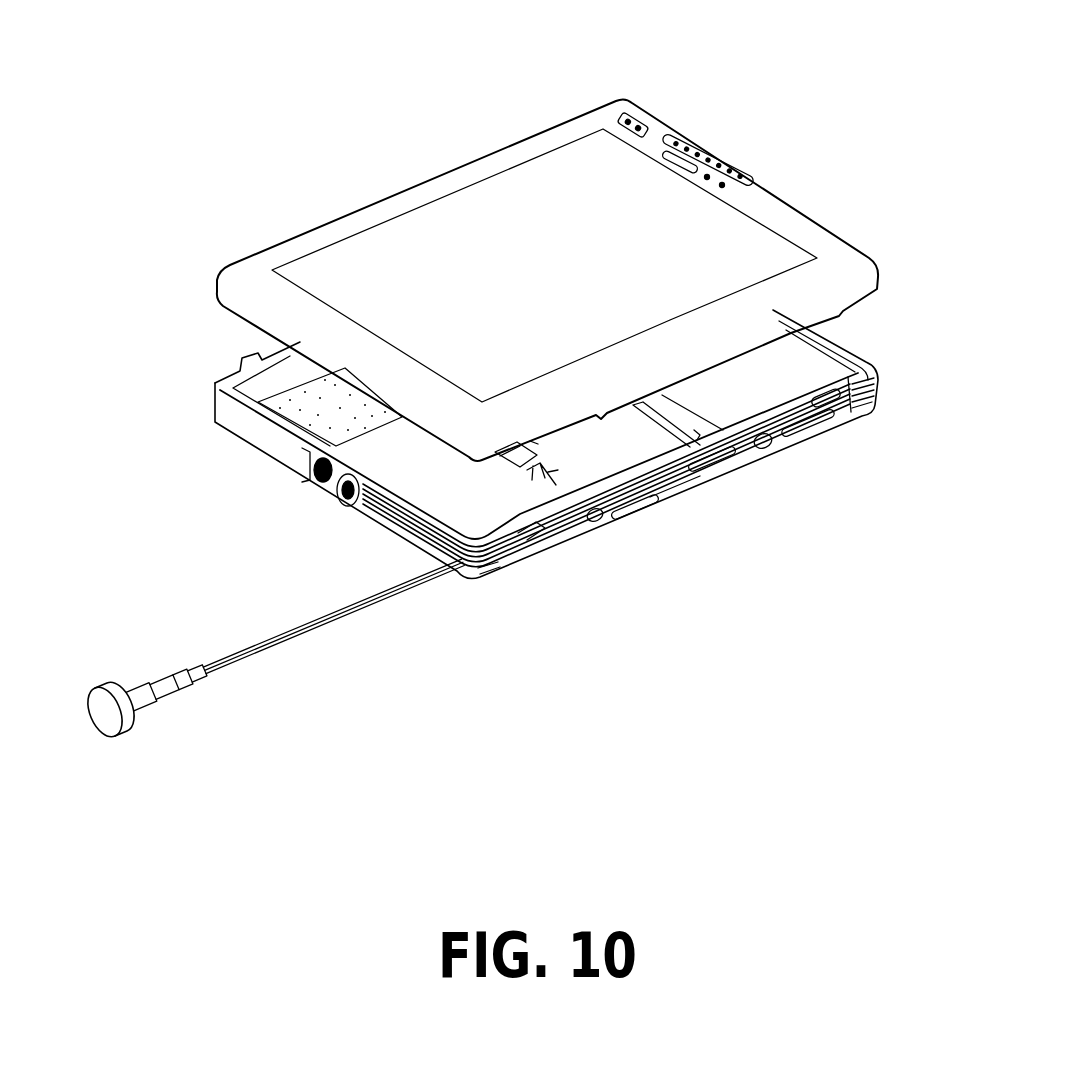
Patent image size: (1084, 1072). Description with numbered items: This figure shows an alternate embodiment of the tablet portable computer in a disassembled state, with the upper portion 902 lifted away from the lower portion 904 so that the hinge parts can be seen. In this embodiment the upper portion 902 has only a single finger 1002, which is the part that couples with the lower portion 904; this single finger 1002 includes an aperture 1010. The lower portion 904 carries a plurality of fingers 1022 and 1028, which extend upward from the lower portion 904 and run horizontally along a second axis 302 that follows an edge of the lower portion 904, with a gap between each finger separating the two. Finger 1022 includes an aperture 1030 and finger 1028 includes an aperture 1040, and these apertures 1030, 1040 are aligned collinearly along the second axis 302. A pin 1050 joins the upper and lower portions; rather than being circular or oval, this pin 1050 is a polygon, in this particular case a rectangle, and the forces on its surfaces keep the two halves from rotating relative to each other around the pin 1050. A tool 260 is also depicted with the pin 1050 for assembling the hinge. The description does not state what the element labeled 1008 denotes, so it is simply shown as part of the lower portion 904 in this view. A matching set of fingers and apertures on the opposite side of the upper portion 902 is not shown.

The tool 260 is at (153, 714).
The second axis 302 is at (271, 652).
The upper portion 902 is at (812, 207).
The lower portion 904 is at (878, 418).
The single finger 1002 is at (683, 378).
The port 1008 is at (667, 500).
The aperture 1010 is at (520, 438).
The finger 1022 is at (527, 545).
The finger 1028 is at (845, 405).
The aperture 1030 is at (492, 577).
The aperture 1040 is at (808, 437).
The pin 1050 is at (365, 608).